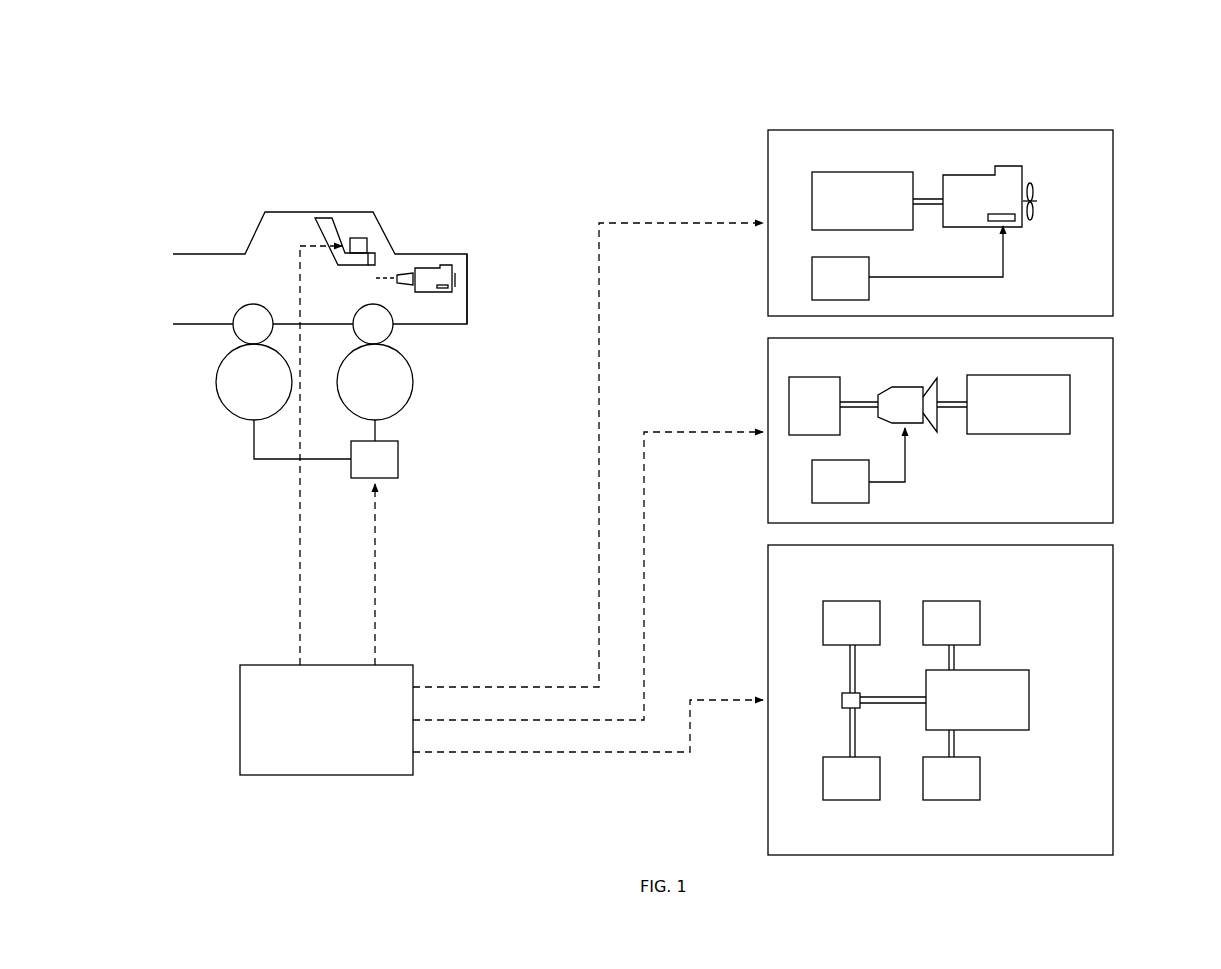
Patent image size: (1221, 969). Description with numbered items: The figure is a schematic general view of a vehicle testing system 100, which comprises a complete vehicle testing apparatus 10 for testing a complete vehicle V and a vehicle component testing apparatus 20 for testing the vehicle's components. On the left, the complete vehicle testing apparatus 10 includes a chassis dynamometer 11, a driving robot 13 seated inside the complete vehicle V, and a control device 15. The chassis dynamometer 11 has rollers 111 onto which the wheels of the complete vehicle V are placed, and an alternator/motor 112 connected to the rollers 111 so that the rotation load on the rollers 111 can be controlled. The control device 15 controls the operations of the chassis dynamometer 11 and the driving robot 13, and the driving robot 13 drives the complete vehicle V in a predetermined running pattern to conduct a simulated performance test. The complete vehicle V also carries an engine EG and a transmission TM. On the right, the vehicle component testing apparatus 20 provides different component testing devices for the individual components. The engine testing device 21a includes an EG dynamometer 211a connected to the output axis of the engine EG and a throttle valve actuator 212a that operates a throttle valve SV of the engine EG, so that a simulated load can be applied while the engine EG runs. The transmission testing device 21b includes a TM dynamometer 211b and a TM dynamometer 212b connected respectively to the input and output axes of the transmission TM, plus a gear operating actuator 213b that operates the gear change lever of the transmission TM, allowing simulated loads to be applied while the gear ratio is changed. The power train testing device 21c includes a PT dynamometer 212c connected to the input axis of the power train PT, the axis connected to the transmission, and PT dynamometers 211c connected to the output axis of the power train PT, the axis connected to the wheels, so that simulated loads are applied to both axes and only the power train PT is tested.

The vehicle testing system 100 is at (375, 104).
The complete vehicle testing apparatus 10 is at (226, 216).
The complete vehicle V is at (470, 250).
The driving robot 13 is at (356, 238).
The transmission TM is at (405, 270).
The engine EG is at (452, 290).
The chassis dynamometer 11 is at (452, 402).
The rollers 111 is at (213, 381).
The alternator/motor 112 is at (398, 470).
The control device 15 is at (240, 713).
The vehicle component testing apparatus 20 is at (742, 144).
The engine testing device 21a is at (1134, 150).
The EG dynamometer 211a is at (865, 172).
The throttle valve SV is at (1012, 224).
The throttle valve actuator 212a is at (869, 287).
The transmission testing device 21b is at (1134, 354).
The TM dynamometer 212b is at (789, 393).
The TM dynamometer 211b is at (1043, 434).
The gear operating actuator 213b is at (869, 490).
The power train testing device 21c is at (1134, 578).
The PT dynamometers 211c is at (846, 600).
The power train PT is at (836, 685).
The PT dynamometer 212c is at (1029, 690).